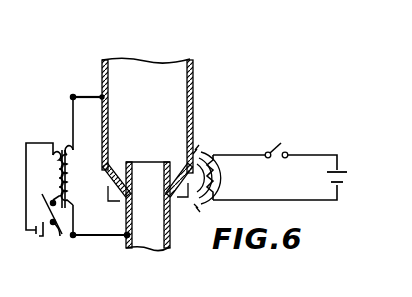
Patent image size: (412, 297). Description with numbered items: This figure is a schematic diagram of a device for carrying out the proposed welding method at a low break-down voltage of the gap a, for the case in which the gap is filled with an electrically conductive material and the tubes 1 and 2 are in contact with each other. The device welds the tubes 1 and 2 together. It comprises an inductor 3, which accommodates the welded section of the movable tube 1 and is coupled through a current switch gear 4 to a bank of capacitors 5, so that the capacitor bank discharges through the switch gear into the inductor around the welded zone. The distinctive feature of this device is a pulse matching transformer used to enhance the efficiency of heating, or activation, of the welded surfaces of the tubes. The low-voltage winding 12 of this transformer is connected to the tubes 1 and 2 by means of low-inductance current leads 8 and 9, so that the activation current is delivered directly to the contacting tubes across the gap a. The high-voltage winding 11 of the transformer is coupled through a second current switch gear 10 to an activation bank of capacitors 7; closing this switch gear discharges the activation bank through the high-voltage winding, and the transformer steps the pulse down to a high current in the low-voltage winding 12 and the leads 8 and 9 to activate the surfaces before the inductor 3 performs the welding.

The tube 1 is at (203, 80).
The tube 2 is at (170, 222).
The inductor 3 is at (211, 178).
The current switch gear 4 is at (276, 141).
The bank of capacitors 5 is at (330, 178).
The activation bank of capacitors 7 is at (43, 237).
The low-inductance current lead 8 is at (88, 97).
The low-inductance current lead 9 is at (108, 235).
The current switch gear 10 is at (61, 237).
The high-voltage winding 11 is at (45, 143).
The low-voltage winding 12 is at (75, 178).
The gap a is at (124, 152).